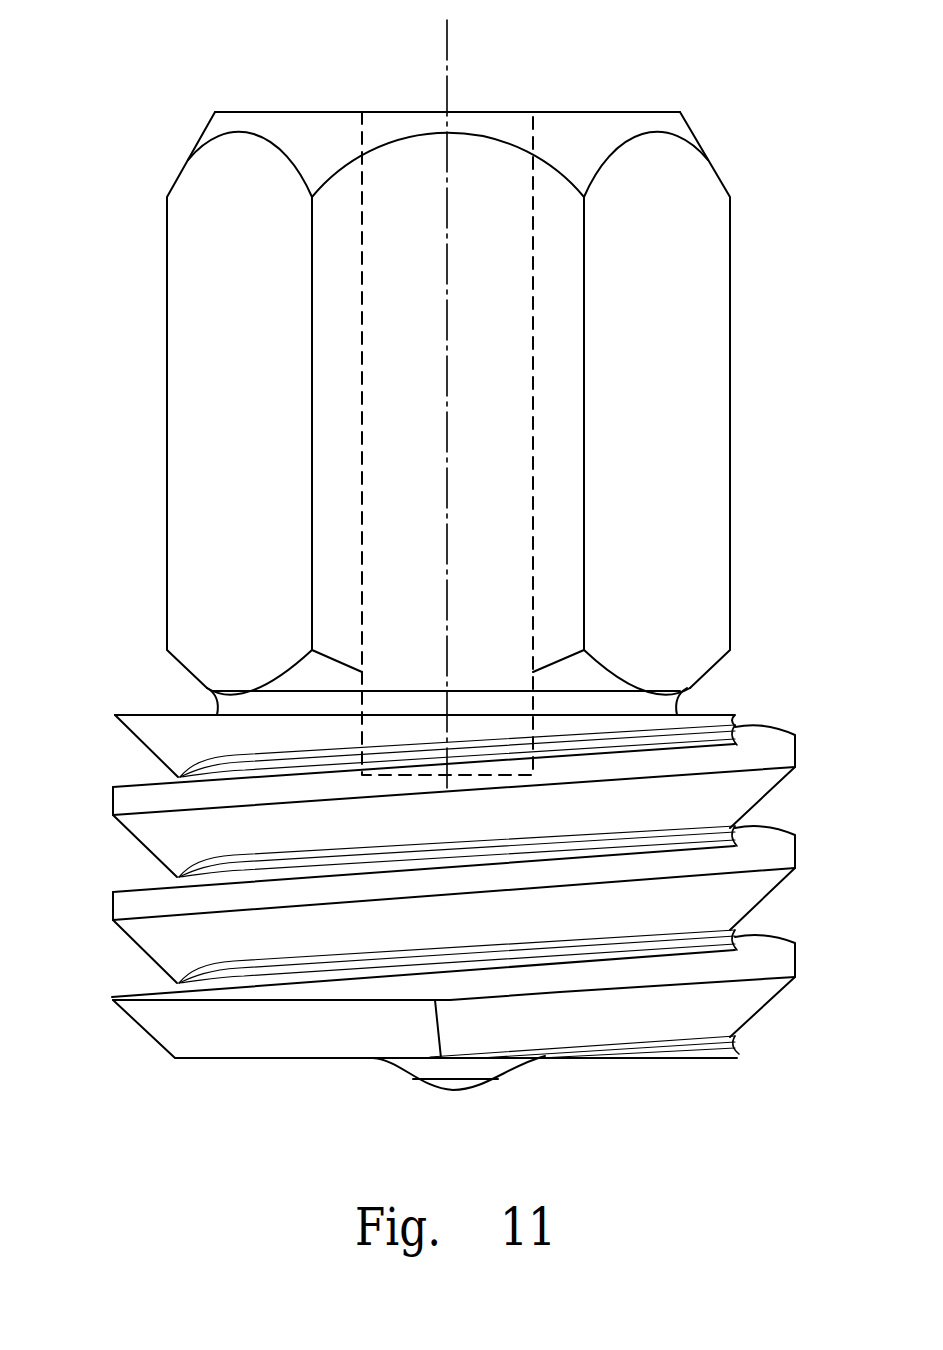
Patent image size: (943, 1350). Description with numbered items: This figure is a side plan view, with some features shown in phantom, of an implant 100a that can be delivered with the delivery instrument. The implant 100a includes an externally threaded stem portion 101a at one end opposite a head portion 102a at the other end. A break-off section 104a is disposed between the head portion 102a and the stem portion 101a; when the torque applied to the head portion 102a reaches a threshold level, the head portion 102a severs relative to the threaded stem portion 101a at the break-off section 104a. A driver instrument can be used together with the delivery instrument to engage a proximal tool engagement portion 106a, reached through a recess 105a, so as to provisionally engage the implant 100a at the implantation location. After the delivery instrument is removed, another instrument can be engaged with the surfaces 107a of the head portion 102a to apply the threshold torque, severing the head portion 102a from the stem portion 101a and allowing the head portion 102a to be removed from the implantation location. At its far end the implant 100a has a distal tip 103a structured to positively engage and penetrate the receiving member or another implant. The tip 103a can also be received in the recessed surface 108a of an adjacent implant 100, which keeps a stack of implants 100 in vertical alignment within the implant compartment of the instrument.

The implant 100 is at (128, 96).
The implant 100a is at (167, 632).
The externally threaded stem portion 101a is at (112, 890).
The head portion 102a is at (730, 333).
The distal tip 103a is at (460, 1090).
The break-off section 104a is at (696, 690).
The recess 105a is at (507, 232).
The proximal tool engagement portion 106a is at (503, 731).
The surfaces of head portion 107a is at (195, 320).
The recessed surface 108a is at (505, 112).